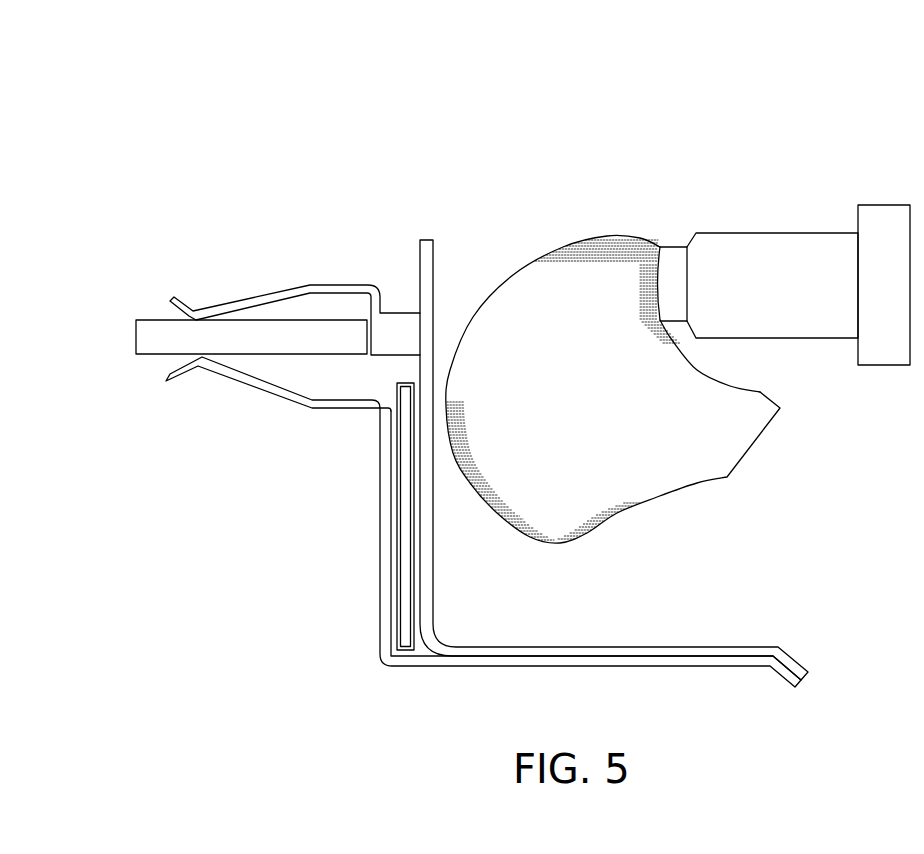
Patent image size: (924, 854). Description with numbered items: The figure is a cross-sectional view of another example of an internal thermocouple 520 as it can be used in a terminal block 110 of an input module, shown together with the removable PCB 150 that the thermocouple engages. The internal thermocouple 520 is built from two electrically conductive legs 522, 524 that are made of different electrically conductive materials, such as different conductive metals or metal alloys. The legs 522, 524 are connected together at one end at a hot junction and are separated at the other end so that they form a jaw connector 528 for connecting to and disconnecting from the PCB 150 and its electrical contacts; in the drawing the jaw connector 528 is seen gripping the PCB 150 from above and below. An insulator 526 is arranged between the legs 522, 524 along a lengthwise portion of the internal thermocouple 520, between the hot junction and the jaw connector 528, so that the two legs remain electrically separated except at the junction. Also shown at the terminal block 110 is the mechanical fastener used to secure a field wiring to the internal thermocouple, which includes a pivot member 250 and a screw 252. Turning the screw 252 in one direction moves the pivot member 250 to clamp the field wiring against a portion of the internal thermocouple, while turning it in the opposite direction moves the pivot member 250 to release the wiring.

The terminal block 110 is at (730, 162).
The removable PCB 150 is at (148, 322).
The pivot member 250 is at (602, 374).
The screw 252 is at (786, 232).
The internal thermocouple 520 is at (315, 528).
The electrically conductive leg 522 is at (430, 657).
The electrically conductive leg 524 is at (428, 603).
The insulator 526 is at (412, 527).
The jaw connector 528 is at (206, 277).